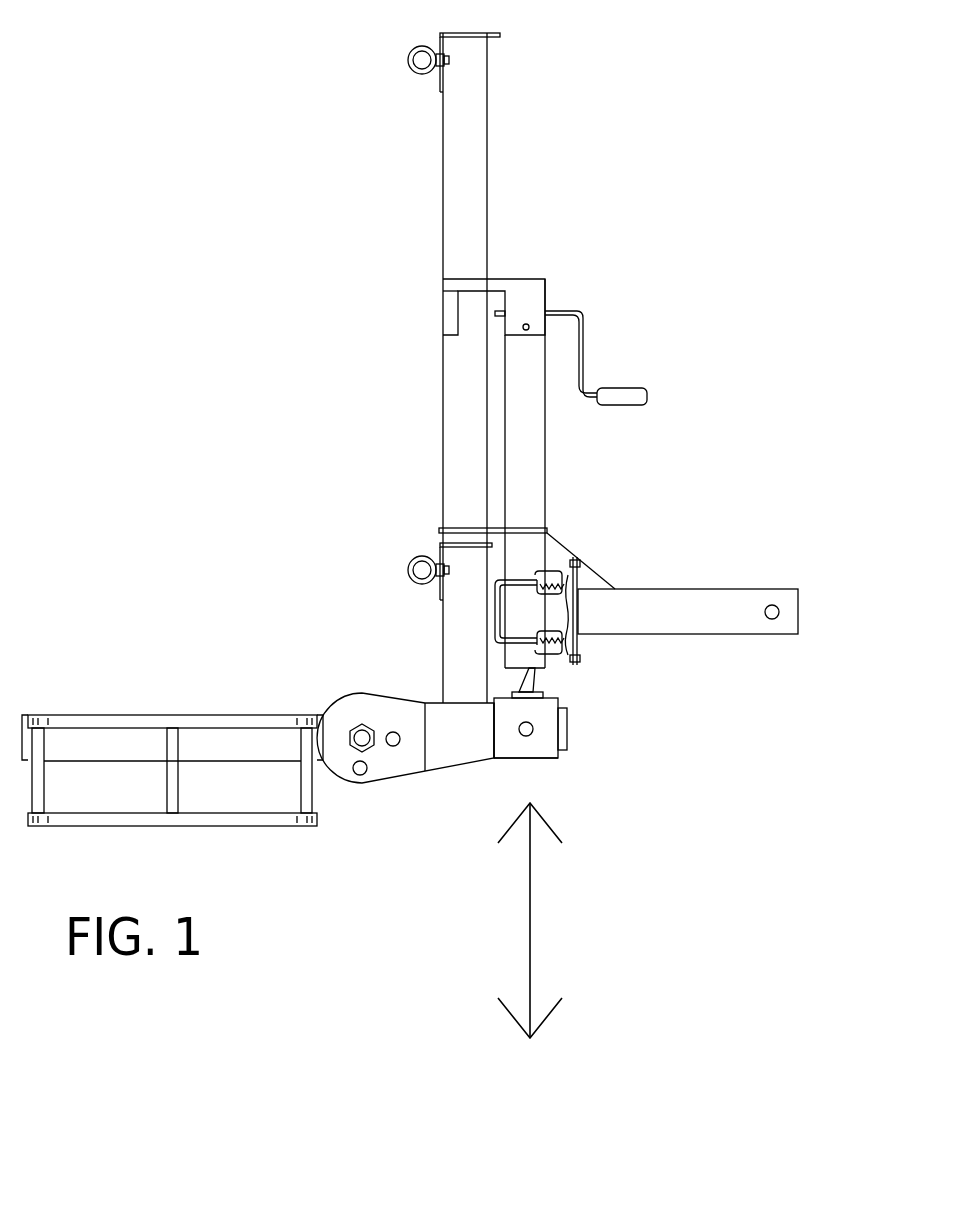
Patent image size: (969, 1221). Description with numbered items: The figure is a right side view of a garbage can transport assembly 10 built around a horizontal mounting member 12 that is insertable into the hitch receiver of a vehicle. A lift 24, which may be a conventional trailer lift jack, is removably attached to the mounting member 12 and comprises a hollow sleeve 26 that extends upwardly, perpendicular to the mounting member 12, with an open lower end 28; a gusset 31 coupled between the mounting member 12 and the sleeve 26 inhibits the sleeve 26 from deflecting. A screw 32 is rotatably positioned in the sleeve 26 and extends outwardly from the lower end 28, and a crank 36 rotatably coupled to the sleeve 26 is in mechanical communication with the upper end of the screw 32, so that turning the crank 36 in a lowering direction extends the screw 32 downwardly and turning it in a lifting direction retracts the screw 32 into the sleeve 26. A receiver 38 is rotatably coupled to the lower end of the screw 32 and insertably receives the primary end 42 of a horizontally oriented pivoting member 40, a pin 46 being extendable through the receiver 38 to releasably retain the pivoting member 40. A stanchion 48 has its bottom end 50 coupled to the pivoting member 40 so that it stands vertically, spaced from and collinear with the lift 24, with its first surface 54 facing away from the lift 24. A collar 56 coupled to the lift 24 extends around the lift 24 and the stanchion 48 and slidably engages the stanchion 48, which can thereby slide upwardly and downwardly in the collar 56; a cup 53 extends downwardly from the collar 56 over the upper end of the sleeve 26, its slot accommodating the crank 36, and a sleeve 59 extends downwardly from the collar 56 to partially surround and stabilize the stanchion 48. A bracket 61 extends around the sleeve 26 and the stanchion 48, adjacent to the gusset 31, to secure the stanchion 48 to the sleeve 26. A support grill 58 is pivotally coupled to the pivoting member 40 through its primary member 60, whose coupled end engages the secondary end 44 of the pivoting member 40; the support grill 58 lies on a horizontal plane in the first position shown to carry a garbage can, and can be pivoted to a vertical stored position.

The garbage can transport assembly 10 is at (176, 223).
The mounting member 12 is at (738, 634).
The lift 24 is at (545, 437).
The sleeve 26 is at (505, 383).
The lower end 28 is at (533, 670).
The gusset 31 is at (560, 547).
The screw 32 is at (512, 683).
The crank 36 is at (587, 338).
The receiver 38 is at (537, 762).
The pivoting member 40 is at (438, 770).
The primary end 42 is at (567, 745).
The secondary end 44 is at (325, 722).
The pin 46 is at (528, 729).
The stanchion 48 is at (443, 192).
The bottom end 50 is at (466, 703).
The cup 53 is at (545, 295).
The first surface 54 is at (426, 152).
The collar 56 is at (518, 278).
The support grill 58 is at (72, 703).
The sleeve 59 is at (443, 300).
The primary member 60 is at (233, 762).
The bracket 61 is at (465, 527).